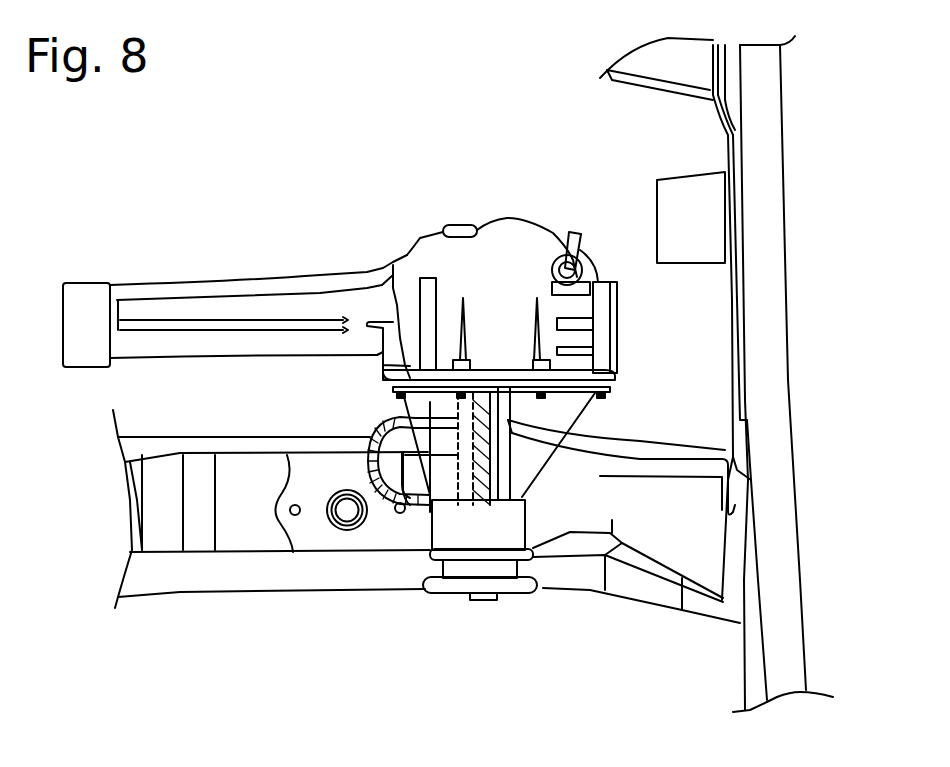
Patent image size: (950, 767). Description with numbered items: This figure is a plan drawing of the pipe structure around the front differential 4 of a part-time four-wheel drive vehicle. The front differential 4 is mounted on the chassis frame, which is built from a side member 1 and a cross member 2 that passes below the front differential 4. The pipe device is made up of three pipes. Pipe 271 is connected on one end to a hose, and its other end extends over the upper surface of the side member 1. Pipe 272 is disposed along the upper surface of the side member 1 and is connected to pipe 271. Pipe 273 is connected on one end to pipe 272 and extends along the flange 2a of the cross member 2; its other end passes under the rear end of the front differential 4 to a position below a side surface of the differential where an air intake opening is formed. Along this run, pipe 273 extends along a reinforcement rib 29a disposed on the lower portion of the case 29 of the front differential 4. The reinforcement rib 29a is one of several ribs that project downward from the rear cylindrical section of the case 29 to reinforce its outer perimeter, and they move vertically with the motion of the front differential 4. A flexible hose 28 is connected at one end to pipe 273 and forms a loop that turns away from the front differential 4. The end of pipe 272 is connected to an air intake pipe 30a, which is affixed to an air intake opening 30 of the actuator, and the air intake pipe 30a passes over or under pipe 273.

The side member 1 is at (777, 270).
The cross member 2 is at (658, 595).
The flange 2a is at (667, 450).
The front differential 4 is at (510, 219).
The pipe 271 is at (727, 62).
The pipe 272 is at (747, 370).
The pipe 273 is at (617, 450).
The flexible hose 28 is at (363, 420).
The case 29 is at (410, 262).
The reinforcement rib 29a is at (490, 490).
The air intake opening 30 is at (447, 570).
The air intake pipe 30a is at (432, 377).